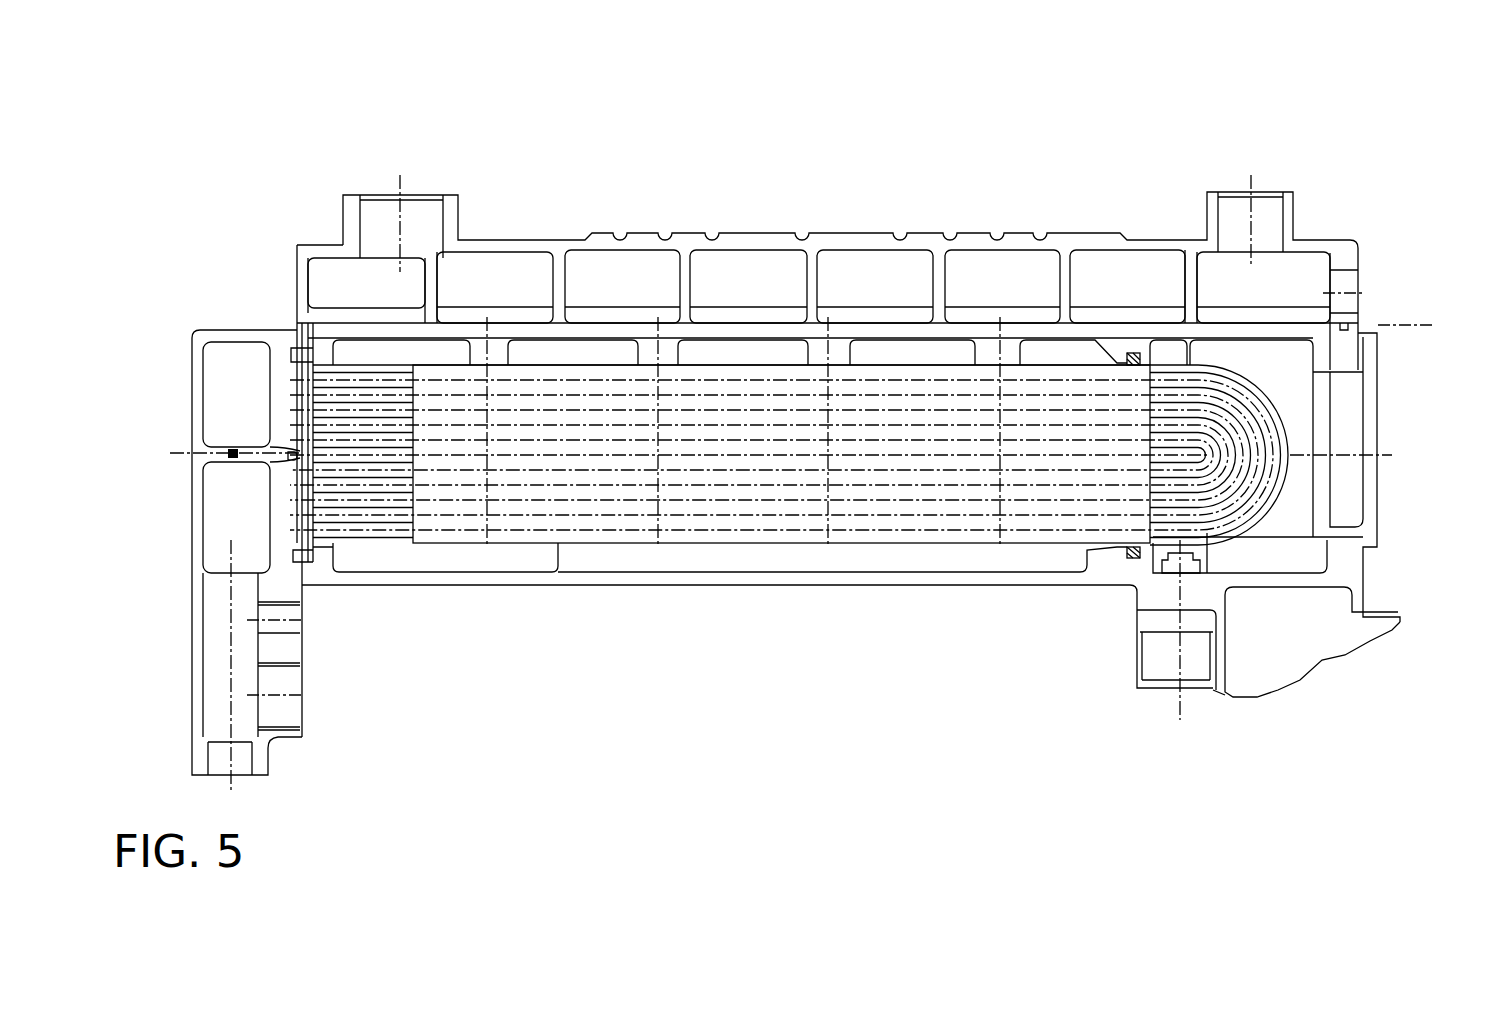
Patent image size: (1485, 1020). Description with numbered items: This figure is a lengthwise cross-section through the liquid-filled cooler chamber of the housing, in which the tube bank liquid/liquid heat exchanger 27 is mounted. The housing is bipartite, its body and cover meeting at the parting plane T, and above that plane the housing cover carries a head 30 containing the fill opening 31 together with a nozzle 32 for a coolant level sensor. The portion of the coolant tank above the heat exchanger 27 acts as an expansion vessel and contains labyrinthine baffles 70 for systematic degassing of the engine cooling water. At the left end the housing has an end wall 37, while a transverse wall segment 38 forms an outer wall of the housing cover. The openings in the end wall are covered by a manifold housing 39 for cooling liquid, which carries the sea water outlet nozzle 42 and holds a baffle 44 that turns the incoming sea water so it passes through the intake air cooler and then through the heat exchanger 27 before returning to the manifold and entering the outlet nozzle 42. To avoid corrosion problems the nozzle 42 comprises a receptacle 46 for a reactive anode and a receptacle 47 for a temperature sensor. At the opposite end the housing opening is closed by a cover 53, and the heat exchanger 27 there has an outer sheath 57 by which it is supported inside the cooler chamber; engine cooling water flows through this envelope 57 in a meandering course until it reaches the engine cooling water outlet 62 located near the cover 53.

The liquid/liquid heat exchanger 27 is at (1040, 545).
The head 30 is at (603, 242).
The fill opening 31 is at (382, 213).
The nozzle 32 is at (1265, 215).
The end wall 37 is at (306, 339).
The transverse wall segment 38 is at (305, 264).
The manifold housing 39 is at (287, 334).
The sea water outlet nozzle 42 is at (196, 693).
The baffle 44 is at (230, 452).
The receptacle for a reactive anode 46 is at (220, 763).
The receptacle for a temperature sensor 47 is at (290, 613).
The cover 53 is at (1345, 498).
The outer sheath 57 is at (490, 548).
The engine cooling water outlet 62 is at (1165, 658).
The labyrinthine baffles 70 is at (1188, 286).
The parting plane T is at (1380, 325).